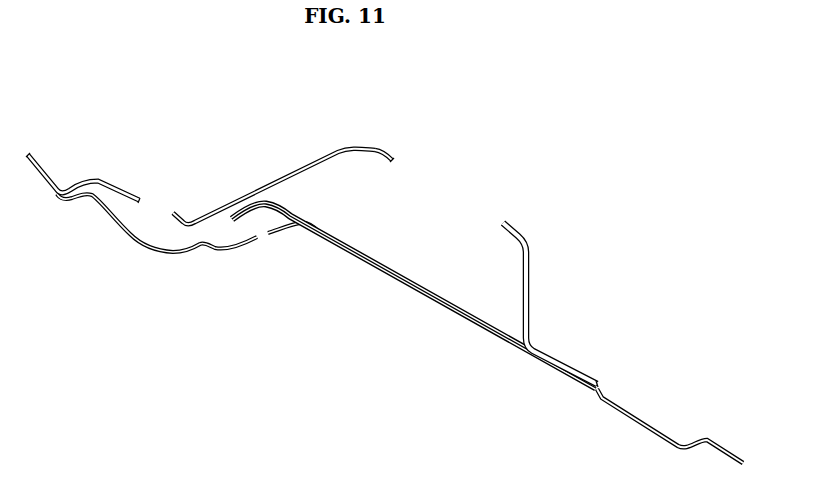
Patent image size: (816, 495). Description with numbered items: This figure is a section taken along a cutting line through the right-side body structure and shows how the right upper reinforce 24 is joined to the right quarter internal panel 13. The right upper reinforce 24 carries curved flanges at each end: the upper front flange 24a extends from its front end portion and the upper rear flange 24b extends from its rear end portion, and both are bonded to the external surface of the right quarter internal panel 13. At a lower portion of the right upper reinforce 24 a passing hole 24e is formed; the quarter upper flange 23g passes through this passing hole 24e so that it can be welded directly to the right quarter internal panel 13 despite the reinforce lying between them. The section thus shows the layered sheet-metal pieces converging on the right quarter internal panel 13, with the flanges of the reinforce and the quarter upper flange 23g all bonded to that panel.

The right quarter internal panel 13 is at (655, 430).
The quarter upper flange 23g is at (473, 313).
The right upper reinforce 24 is at (374, 135).
The upper front flange 24a is at (562, 360).
The upper rear flange 24b is at (43, 168).
The passing hole 24e is at (393, 159).